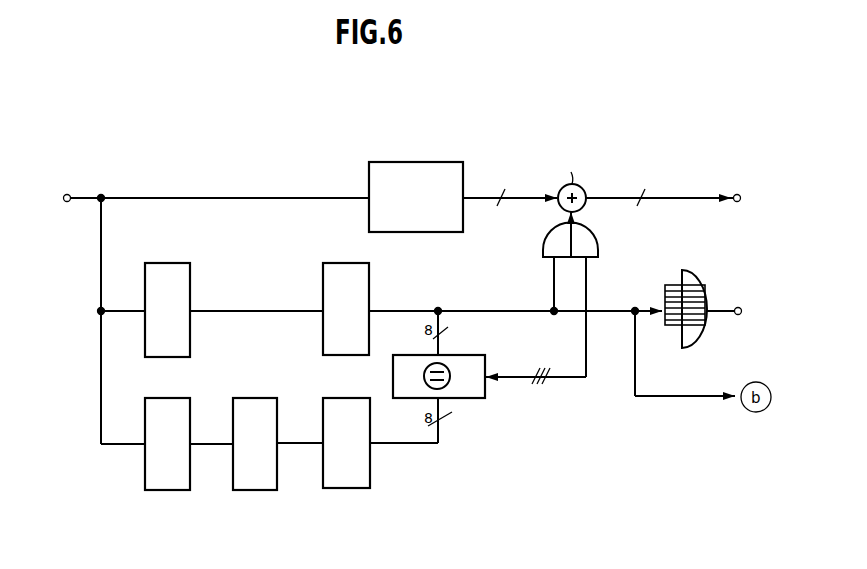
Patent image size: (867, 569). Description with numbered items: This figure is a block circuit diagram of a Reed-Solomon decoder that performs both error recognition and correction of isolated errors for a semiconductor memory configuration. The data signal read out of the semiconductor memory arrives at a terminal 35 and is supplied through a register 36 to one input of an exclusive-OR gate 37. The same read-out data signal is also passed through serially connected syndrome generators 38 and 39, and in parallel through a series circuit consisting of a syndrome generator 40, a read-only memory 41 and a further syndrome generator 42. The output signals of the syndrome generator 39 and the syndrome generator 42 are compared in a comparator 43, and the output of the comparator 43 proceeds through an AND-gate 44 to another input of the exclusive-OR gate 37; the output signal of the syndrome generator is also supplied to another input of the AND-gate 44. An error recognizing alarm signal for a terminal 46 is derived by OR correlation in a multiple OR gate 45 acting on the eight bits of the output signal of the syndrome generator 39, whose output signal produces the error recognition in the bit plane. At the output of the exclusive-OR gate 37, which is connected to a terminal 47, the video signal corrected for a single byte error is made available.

The terminal 35 is at (74, 191).
The register 36 is at (413, 162).
The exclusive-OR gate 37 is at (582, 208).
The syndrome generator 38 is at (166, 263).
The syndrome generator 39 is at (337, 263).
The syndrome generator 40 is at (173, 490).
The read-only memory 41 is at (257, 490).
The syndrome generator 42 is at (350, 488).
The comparator 43 is at (485, 398).
The AND-gate 44 is at (597, 239).
The multiple OR gate 45 is at (688, 270).
The terminal 46 is at (739, 301).
The terminal 47 is at (734, 176).